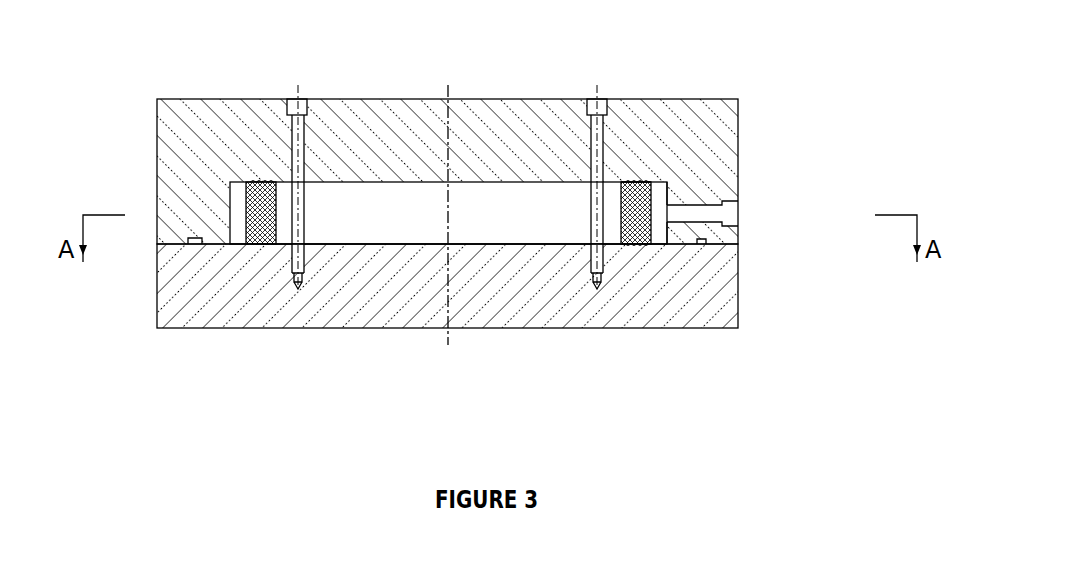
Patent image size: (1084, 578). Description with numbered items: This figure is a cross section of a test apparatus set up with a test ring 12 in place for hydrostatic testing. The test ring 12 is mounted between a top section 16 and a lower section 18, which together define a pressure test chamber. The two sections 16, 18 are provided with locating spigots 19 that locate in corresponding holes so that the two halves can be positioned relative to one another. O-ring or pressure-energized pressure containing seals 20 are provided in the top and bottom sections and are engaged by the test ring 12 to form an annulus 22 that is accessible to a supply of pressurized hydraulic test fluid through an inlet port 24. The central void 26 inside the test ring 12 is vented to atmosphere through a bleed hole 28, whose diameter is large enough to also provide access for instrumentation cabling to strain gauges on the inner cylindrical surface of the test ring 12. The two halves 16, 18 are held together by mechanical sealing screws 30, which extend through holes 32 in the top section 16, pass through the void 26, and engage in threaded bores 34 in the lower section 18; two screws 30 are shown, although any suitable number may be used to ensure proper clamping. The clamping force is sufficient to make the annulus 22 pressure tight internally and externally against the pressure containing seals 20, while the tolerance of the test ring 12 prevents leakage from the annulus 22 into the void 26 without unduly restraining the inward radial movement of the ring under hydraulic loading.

The test ring 12 is at (655, 188).
The top section 16 is at (200, 118).
The lower section 18 is at (198, 317).
The locating spigots 19 is at (714, 246).
The pressure containing seals 20 is at (643, 246).
The annulus 22 is at (659, 195).
The inlet port 24 is at (748, 214).
The central void 26 is at (490, 223).
The bleed hole 28 is at (445, 99).
The mechanical sealing screws 30 is at (592, 105).
The holes 32 is at (288, 105).
The threaded bores 34 is at (303, 287).